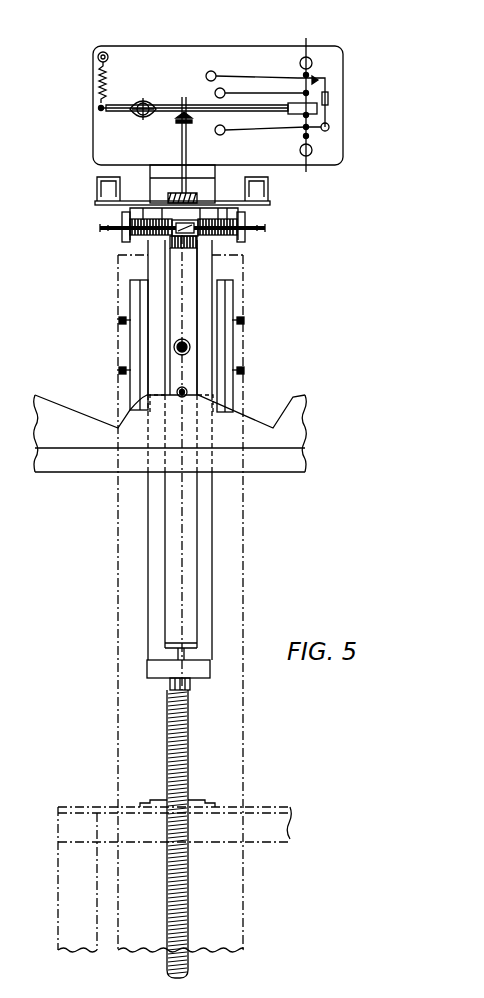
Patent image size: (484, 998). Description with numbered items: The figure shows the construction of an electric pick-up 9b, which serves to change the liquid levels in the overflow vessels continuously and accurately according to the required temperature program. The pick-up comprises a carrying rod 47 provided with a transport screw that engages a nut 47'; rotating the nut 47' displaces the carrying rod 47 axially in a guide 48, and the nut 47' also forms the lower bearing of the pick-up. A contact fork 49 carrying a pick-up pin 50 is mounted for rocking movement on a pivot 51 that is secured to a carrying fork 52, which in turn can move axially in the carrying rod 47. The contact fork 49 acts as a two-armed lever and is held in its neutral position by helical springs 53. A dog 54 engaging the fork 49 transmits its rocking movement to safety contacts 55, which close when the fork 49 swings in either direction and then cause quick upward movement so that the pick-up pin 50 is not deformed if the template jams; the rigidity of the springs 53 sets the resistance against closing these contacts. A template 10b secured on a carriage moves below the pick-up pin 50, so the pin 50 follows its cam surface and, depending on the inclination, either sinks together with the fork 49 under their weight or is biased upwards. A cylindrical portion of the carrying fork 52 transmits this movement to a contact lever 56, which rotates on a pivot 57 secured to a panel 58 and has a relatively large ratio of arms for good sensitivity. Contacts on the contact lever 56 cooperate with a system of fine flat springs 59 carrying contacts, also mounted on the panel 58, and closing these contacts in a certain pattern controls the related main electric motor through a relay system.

The electric pick-up 9b is at (262, 340).
The template 10b is at (290, 420).
The carrying rod 47 is at (210, 465).
The nut 47' is at (208, 834).
The guide 48 is at (222, 307).
The contact fork 49 is at (173, 281).
The pick-up pin 50 is at (177, 392).
The pivot 51 is at (174, 346).
The carrying fork 52 is at (190, 528).
The helical springs 53 is at (213, 235).
The dog 54 is at (162, 238).
The safety contacts 55 is at (103, 207).
The contact lever 56 is at (162, 112).
The pivot 57 is at (148, 104).
The panel 58 is at (93, 135).
The fine flat springs 59 is at (290, 125).